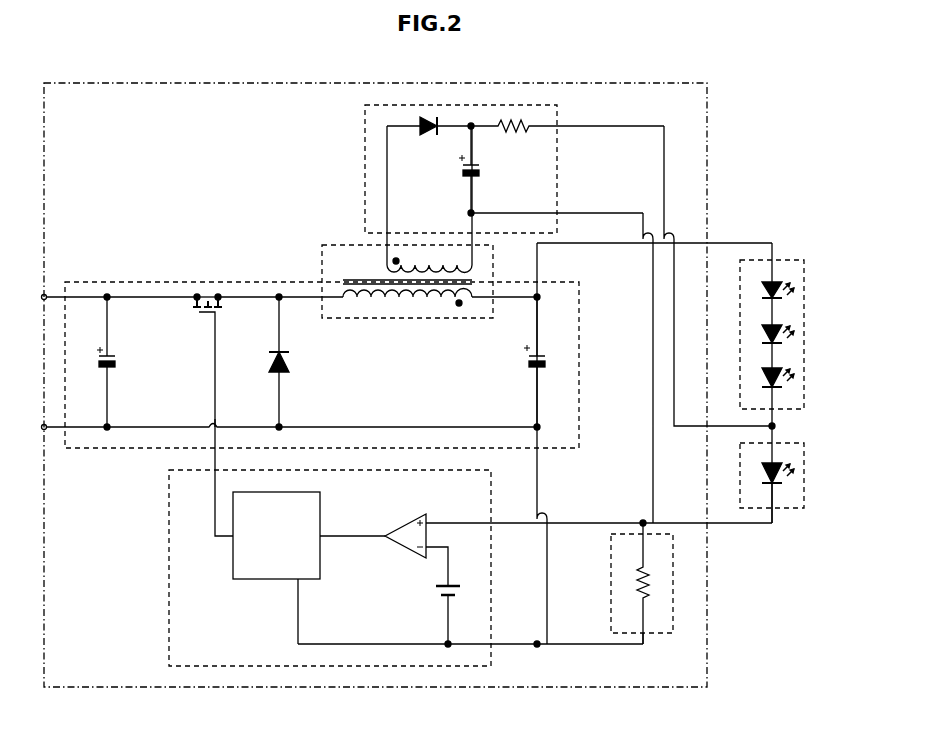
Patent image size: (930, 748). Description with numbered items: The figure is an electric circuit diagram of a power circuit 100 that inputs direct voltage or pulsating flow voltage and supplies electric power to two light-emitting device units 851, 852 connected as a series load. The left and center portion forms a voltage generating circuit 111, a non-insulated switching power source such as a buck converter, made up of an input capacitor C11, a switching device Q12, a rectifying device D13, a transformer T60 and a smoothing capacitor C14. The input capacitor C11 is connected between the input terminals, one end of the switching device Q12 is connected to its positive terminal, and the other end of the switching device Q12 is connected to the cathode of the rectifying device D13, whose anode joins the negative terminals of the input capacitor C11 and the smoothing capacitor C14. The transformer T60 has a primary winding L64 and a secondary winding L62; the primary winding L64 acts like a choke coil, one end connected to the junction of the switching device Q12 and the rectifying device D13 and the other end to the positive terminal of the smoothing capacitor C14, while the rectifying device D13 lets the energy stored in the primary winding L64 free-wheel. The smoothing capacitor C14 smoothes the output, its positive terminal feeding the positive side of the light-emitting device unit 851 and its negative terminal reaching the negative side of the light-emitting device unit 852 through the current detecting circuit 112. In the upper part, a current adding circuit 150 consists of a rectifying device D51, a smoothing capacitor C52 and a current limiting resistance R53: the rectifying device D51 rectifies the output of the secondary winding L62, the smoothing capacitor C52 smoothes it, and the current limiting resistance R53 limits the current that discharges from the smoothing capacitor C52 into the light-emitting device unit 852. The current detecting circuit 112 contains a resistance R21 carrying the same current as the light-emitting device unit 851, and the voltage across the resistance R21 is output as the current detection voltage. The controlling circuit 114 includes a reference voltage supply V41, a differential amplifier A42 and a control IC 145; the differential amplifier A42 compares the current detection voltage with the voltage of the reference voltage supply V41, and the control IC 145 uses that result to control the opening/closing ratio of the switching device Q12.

The power circuit 100 is at (709, 98).
The current adding circuit 150 is at (559, 120).
The rectifying device D51 is at (426, 135).
The current limiting resistance R53 is at (512, 135).
The smoothing capacitor C52 is at (479, 176).
The transformer T60 is at (320, 263).
The secondary winding L62 is at (428, 262).
The primary winding L64 is at (401, 306).
The voltage generating circuit 111 is at (581, 297).
The light-emitting device unit 851 is at (806, 245).
The light-emitting device unit 852 is at (804, 508).
The switching device Q12 is at (206, 296).
The input capacitor C11 is at (112, 350).
The rectifying device D13 is at (300, 346).
The smoothing capacitor C14 is at (522, 365).
The controlling circuit 114 is at (167, 488).
The control IC 145 is at (322, 507).
The differential amplifier A42 is at (400, 510).
The reference voltage supply V41 is at (438, 596).
The resistance R21 is at (630, 575).
The current detecting circuit 112 is at (673, 633).